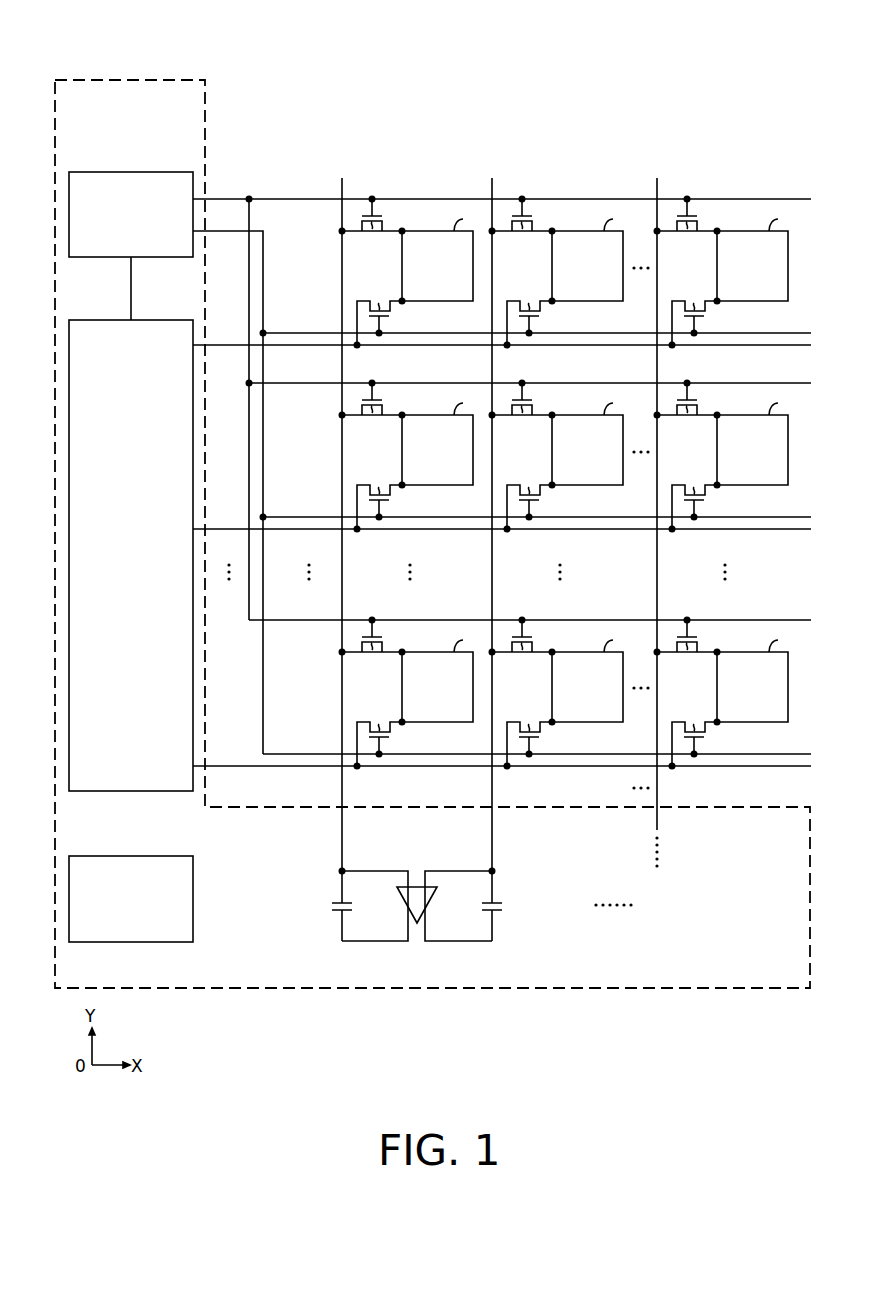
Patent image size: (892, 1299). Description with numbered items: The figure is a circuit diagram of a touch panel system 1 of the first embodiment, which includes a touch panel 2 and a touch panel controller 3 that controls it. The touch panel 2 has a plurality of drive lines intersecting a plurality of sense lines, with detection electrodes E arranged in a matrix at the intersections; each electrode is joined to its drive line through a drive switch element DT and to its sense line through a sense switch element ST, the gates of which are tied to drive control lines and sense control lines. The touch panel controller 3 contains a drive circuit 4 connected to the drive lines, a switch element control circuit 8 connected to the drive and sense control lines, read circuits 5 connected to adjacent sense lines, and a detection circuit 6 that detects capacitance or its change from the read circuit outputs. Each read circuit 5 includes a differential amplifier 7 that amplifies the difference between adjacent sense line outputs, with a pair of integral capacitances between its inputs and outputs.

The touch panel system 1 is at (310, 53).
The touch panel 2 is at (308, 116).
The touch panel controller 3 is at (186, 80).
The drive circuit 4 is at (158, 320).
The read circuit 5 is at (378, 864).
The detection circuit 6 is at (158, 856).
The differential amplifier 7 is at (417, 925).
The switch element control circuit 8 is at (158, 172).